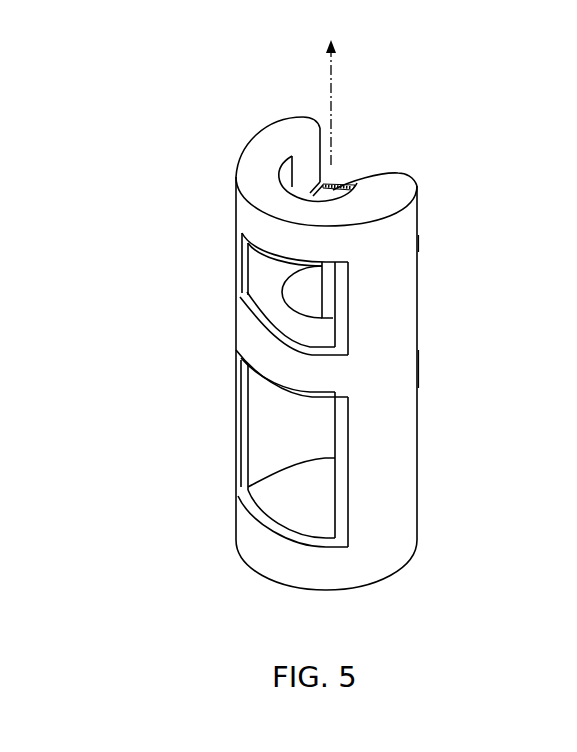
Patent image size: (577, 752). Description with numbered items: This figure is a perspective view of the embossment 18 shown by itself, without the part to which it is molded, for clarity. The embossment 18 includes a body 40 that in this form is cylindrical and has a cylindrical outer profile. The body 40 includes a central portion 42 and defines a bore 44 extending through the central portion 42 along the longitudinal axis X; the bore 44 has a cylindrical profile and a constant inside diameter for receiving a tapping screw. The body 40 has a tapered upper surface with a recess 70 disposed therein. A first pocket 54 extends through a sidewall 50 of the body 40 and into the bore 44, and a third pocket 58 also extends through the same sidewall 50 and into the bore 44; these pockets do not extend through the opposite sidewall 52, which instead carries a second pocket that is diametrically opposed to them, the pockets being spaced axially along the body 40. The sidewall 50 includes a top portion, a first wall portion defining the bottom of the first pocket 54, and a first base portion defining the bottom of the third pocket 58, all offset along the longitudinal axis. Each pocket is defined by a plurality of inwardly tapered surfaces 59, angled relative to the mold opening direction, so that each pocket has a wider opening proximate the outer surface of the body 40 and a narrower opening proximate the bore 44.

The embossment 18 is at (122, 82).
The body 40 is at (356, 366).
The central portion 42 is at (303, 169).
The bore 44 is at (330, 296).
The sidewall 50 is at (244, 563).
The opposite sidewall 52 is at (418, 513).
The first pocket 54 is at (277, 289).
The third pocket 58 is at (296, 440).
The inwardly tapered surfaces 59 is at (287, 323).
The recess 70 is at (364, 172).